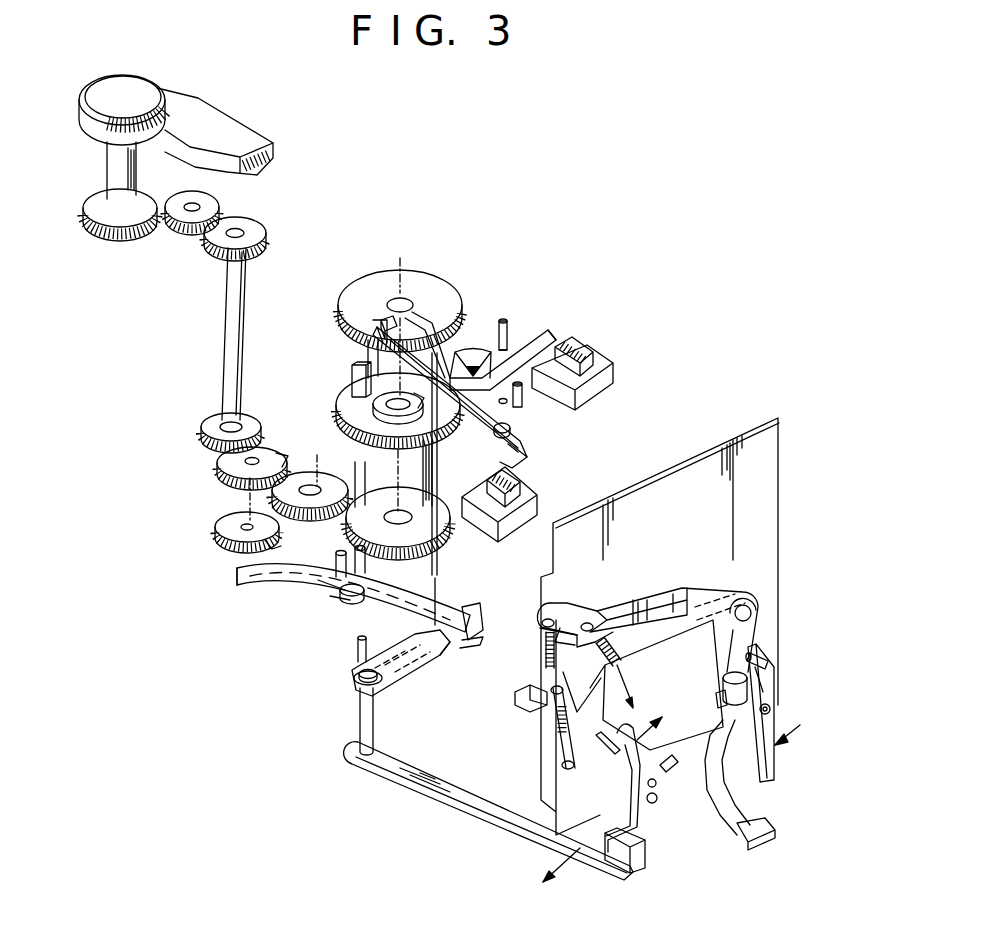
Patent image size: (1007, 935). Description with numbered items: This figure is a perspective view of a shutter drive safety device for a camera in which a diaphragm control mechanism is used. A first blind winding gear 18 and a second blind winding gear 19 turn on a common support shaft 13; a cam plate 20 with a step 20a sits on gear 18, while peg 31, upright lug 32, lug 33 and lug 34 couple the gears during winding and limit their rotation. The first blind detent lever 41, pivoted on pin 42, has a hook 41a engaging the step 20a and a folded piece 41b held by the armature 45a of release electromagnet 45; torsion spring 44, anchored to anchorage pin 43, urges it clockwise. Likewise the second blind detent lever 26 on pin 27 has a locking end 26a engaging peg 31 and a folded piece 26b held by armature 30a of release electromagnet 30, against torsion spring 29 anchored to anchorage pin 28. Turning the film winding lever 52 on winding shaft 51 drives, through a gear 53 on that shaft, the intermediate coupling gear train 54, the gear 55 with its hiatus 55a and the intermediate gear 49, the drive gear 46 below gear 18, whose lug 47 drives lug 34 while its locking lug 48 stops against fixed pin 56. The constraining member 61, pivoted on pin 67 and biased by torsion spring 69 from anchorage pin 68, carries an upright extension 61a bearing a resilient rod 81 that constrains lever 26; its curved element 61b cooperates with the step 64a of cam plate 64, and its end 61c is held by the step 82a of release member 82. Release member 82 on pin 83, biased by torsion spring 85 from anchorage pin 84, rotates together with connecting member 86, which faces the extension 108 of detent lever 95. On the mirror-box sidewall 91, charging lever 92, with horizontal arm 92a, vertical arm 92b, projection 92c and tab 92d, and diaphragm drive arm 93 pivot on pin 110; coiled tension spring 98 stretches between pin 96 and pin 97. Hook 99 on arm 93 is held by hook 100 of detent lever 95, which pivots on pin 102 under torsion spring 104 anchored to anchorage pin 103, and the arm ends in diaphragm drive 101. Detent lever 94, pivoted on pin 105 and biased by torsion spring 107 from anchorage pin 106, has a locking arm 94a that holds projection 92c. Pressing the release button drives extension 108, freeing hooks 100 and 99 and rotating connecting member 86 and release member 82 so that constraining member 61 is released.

The support shaft 13 is at (398, 266).
The first blind winding gear 18 is at (354, 422).
The second blind winding gear 19 is at (410, 273).
The cam plate 20 is at (373, 410).
The step 20a is at (371, 398).
The second blind detent lever 26 is at (495, 355).
The locking end 26a is at (405, 333).
The folded piece 26b is at (555, 335).
The pin 27 is at (503, 395).
The anchorage pin 28 is at (505, 320).
The torsion spring 29 is at (508, 340).
The release electromagnet 30 is at (605, 366).
The armature 30a is at (581, 343).
The peg 31 is at (383, 318).
The upright lug 32 is at (354, 373).
The lug 33 is at (367, 350).
The lug 34 is at (344, 455).
The first blind detent lever 41 is at (508, 453).
The hook 41a is at (413, 356).
The folded piece 41b is at (518, 478).
The pin 42 is at (514, 447).
The anchorage pin 43 is at (522, 398).
The torsion spring 44 is at (510, 423).
The release electromagnet 45 is at (517, 510).
The armature 45a is at (463, 508).
The drive gear 46 is at (444, 556).
The lug 47 is at (398, 488).
The locking lug 48 is at (364, 556).
The intermediate gear 49 is at (313, 518).
The winding shaft 51 is at (112, 165).
The film winding lever 52 is at (213, 118).
The knob disk 53 is at (95, 207).
The intermediate coupling gear train 54 is at (197, 430).
The gear with a hiatus 55 is at (235, 469).
The hiatus 55a is at (250, 492).
The fixed pin 56 is at (341, 551).
The constraining member 61 is at (393, 604).
The upright extension 61a is at (448, 606).
The element 61b is at (244, 576).
The end 61c is at (447, 628).
The cam plate 64 is at (233, 532).
The step 64a is at (262, 563).
The pin 67 is at (352, 600).
The anchorage pin 68 is at (318, 582).
The torsion spring 69 is at (331, 597).
The resilient rod 81 is at (474, 363).
The release member 82 is at (412, 661).
The step 82a is at (446, 646).
The pin 83 is at (372, 715).
The anchorage pin 84 is at (357, 646).
The torsion spring 85 is at (356, 672).
The connecting member 86 is at (465, 788).
The sidewall 91 is at (653, 500).
The charging lever 92 is at (675, 596).
The horizontal arm 92a is at (574, 614).
The vertical arm 92b is at (726, 765).
The projection 92c is at (717, 705).
The tab 92d is at (756, 840).
The diaphragm drive arm 93 is at (637, 656).
The detent lever 94 is at (768, 728).
The locking arm 94a is at (723, 678).
The detent lever 95 is at (647, 818).
The pin 96 is at (548, 631).
The pin 97 is at (567, 769).
The coiled tension spring 98 is at (556, 660).
The hook 99 is at (608, 748).
The hook 100 is at (645, 743).
The diaphragm drive 101 is at (528, 690).
The pin 102 is at (648, 783).
The anchorage pin 103 is at (670, 769).
The torsion spring 104 is at (657, 800).
The pin 105 is at (770, 708).
The anchorage pin 106 is at (768, 656).
The torsion spring 107 is at (760, 667).
The extension 108 is at (634, 858).
The pin 110 is at (743, 604).